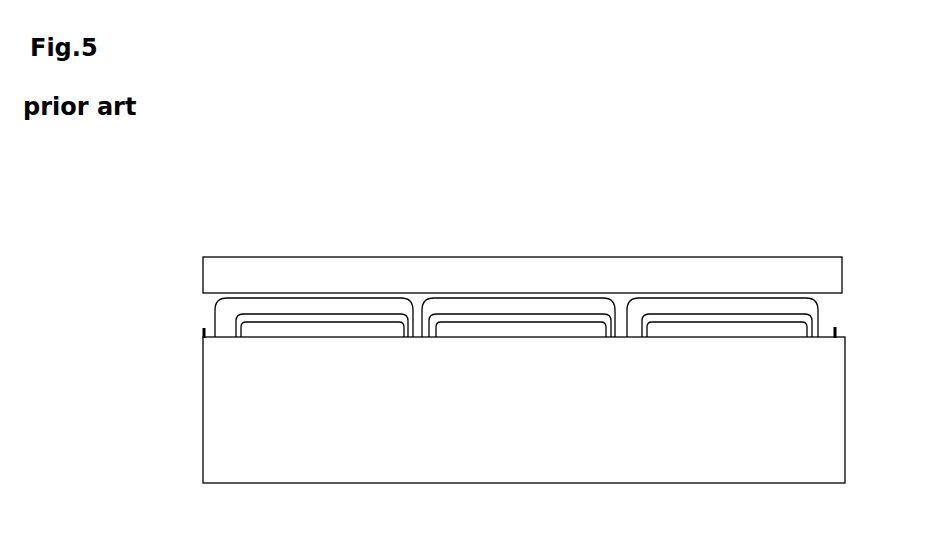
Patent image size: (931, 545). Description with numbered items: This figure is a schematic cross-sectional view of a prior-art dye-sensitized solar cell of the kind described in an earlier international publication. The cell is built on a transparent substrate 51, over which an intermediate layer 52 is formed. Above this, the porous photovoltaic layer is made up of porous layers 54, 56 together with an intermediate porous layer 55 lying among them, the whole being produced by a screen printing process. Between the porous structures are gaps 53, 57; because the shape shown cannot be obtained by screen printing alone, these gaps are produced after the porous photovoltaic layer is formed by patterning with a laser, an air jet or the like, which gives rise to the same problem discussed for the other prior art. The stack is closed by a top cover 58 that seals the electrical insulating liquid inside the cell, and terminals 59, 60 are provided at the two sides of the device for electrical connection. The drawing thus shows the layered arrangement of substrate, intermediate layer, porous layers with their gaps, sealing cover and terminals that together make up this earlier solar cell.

The transparent substrate 51 is at (807, 390).
The intermediate layer 52 is at (677, 326).
The gap 53 is at (635, 315).
The porous layer 54 is at (383, 305).
The intermediate porous layer 55 is at (480, 317).
The porous layer 56 is at (675, 308).
The gap 57 is at (410, 295).
The top cover 58 is at (230, 272).
The terminal 59 is at (205, 320).
The terminal 60 is at (817, 328).